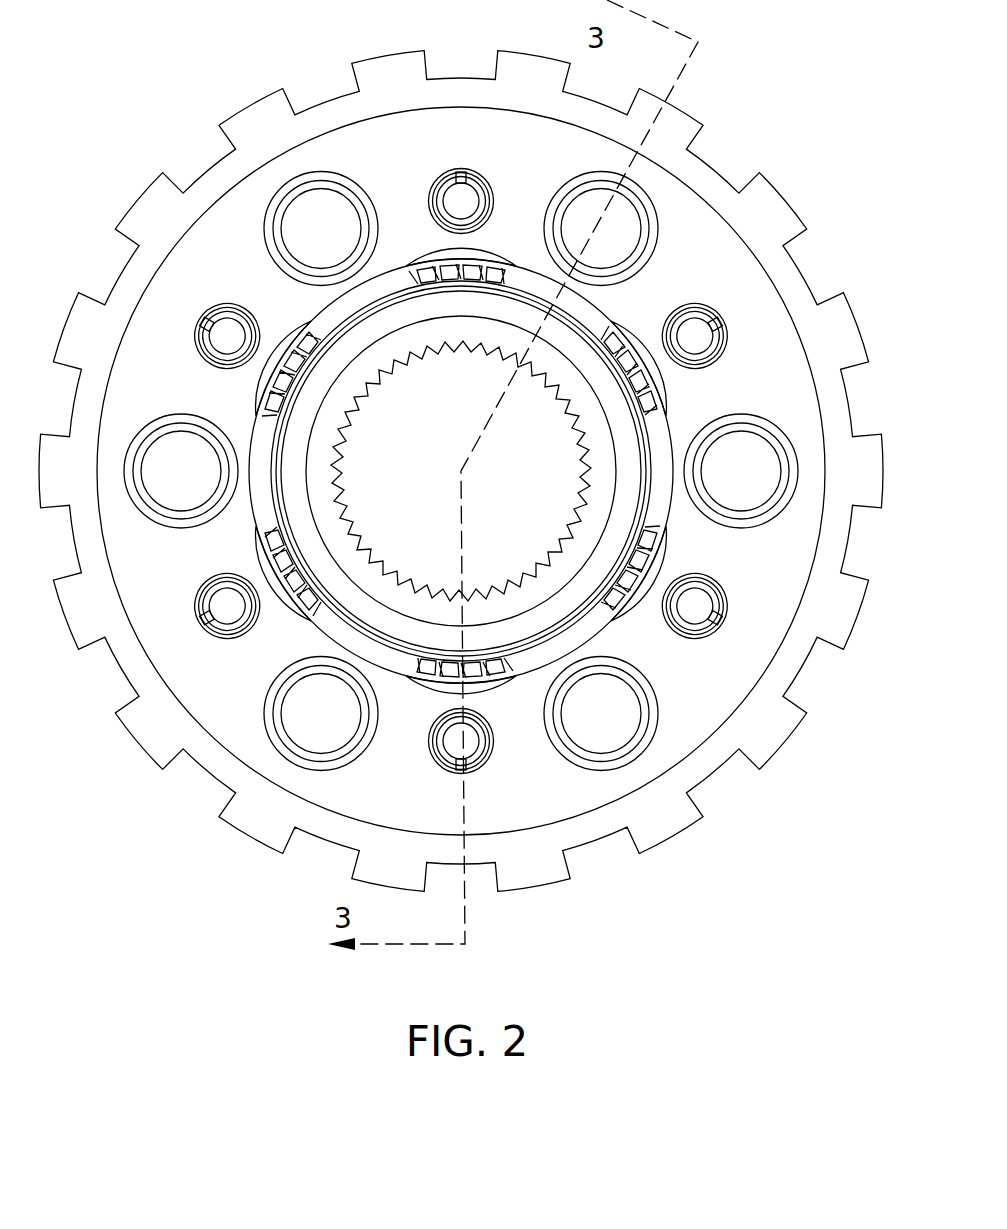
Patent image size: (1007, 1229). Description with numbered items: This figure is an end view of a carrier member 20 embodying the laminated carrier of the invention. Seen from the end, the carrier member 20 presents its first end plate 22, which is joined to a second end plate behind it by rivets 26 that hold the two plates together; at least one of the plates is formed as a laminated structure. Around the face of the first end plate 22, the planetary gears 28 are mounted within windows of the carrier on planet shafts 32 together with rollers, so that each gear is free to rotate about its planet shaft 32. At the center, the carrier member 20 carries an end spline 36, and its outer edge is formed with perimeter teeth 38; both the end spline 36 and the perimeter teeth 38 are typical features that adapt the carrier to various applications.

The carrier member 20 is at (752, 112).
The first end plate 22 is at (728, 245).
The rivets 26 is at (325, 203).
The planetary gears 28 is at (293, 367).
The planet shafts 32 is at (200, 325).
The end spline 36 is at (553, 388).
The perimeter teeth 38 is at (163, 173).